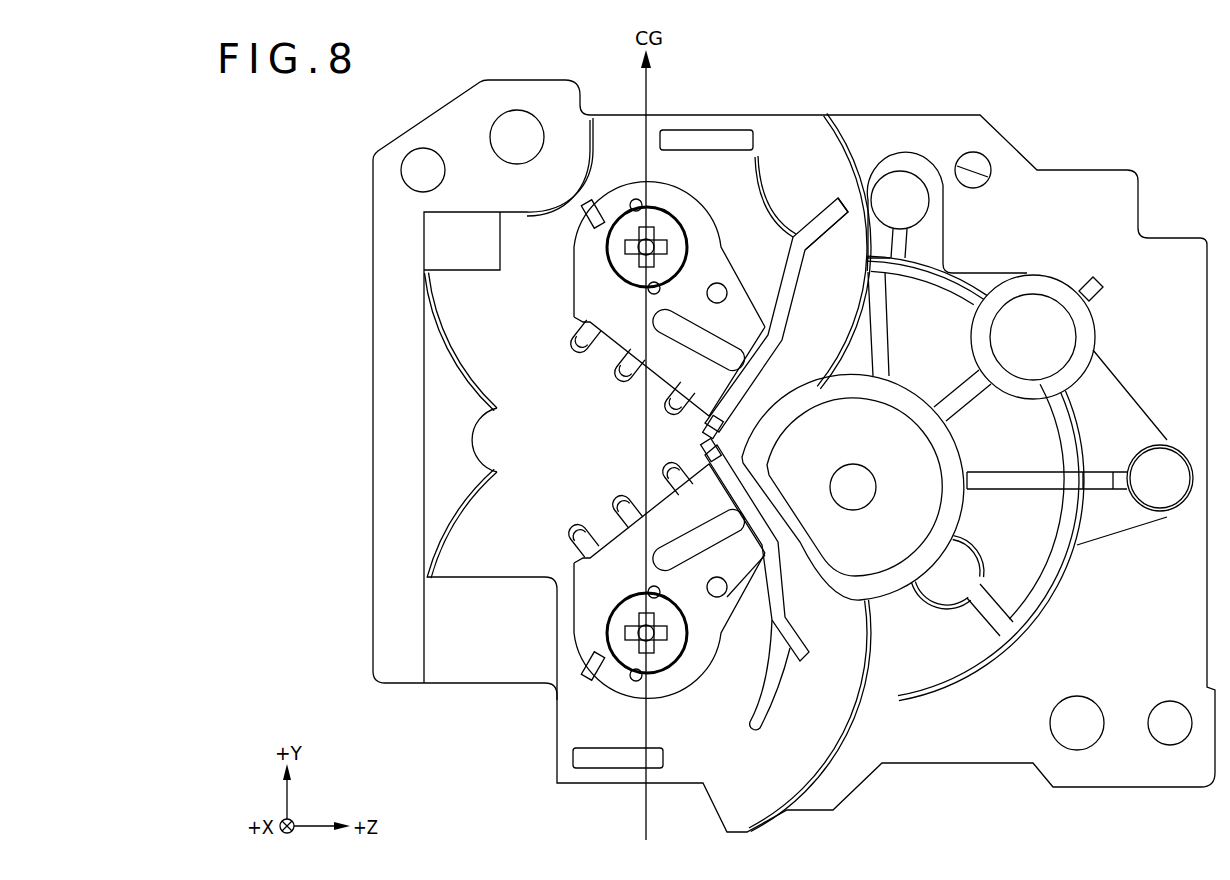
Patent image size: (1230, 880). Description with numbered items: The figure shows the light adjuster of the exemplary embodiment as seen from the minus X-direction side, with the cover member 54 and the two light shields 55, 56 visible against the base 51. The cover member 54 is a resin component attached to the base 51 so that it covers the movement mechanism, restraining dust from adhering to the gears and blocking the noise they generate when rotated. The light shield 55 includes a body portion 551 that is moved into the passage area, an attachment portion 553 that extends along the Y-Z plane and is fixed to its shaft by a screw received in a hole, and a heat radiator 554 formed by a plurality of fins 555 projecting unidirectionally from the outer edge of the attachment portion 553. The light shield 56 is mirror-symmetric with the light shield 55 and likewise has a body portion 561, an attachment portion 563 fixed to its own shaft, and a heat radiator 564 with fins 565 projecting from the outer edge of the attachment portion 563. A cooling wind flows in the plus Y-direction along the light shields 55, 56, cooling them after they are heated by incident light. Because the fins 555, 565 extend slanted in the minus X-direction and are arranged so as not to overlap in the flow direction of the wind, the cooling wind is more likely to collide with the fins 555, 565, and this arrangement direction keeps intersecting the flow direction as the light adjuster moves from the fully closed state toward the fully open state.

The base 51 is at (398, 667).
The cover member 54 is at (937, 655).
The light shield 55 is at (790, 572).
The body portion 551 is at (808, 660).
The attachment portion 553 is at (590, 582).
The heat radiator 554 is at (628, 510).
The fins 555 is at (643, 497).
The light shield 56 is at (780, 355).
The body portion 561 is at (797, 258).
The attachment portion 563 is at (590, 278).
The heat radiator 564 is at (617, 377).
The fins 565 is at (645, 379).